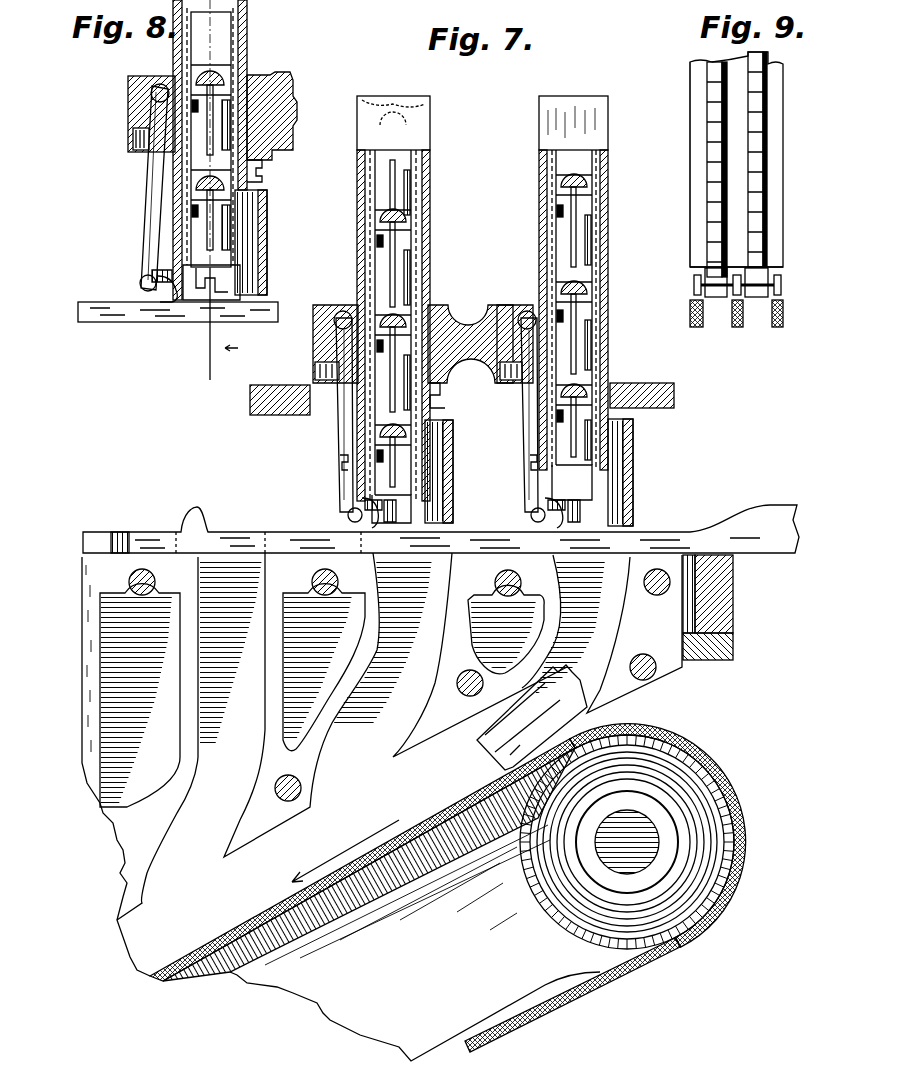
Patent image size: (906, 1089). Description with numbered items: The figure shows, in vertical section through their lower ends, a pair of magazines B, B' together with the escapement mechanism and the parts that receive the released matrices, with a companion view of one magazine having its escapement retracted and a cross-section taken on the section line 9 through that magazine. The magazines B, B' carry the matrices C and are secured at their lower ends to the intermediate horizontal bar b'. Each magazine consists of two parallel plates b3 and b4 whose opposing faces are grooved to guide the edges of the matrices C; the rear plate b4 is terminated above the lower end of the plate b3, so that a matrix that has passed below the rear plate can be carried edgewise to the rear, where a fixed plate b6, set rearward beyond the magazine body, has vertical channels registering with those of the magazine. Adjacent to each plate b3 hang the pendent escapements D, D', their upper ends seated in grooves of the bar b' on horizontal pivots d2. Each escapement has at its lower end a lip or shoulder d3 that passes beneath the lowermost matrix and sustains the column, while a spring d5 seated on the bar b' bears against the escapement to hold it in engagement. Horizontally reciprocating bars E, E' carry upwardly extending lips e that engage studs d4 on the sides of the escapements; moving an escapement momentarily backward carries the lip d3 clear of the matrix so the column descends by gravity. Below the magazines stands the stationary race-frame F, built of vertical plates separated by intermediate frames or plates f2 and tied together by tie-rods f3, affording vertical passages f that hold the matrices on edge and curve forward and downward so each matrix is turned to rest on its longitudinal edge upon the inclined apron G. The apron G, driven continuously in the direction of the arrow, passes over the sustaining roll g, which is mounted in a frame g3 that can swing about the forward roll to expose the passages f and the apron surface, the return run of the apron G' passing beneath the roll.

In FIG. 7, the magazine B is at (406, 123).
In FIG. 7, the magazine B' is at (557, 123).
In FIG. 8, the matrix C is at (222, 56).
In FIG. 9, the matrix C is at (712, 118).
In FIG. 7, the matrix C is at (375, 176).
In FIG. 8, the lower horizontal bar b' is at (273, 118).
In FIG. 7, the lower horizontal bar b' is at (462, 360).
In FIG. 8, the front magazine plate b3 is at (172, 205).
In FIG. 7, the front magazine plate b3 is at (357, 255).
In FIG. 8, the rear magazine plate b4 is at (248, 32).
In FIG. 7, the rear magazine plate b4 is at (430, 268).
In FIG. 8, the fixed plate b6 is at (268, 240).
In FIG. 7, the fixed plate b6 is at (455, 437).
In FIG. 8, the horizontal pivot d2 is at (158, 82).
In FIG. 7, the horizontal pivot d2 is at (341, 310).
In FIG. 8, the lip or shoulder d3 is at (160, 268).
In FIG. 9, the lip or shoulder d3 is at (705, 268).
In FIG. 7, the lip or shoulder d3 is at (395, 508).
In FIG. 8, the stud d4 is at (140, 283).
In FIG. 9, the stud d4 is at (694, 284).
In FIG. 7, the stud d4 is at (348, 512).
In FIG. 8, the spring d5 is at (133, 150).
In FIG. 7, the spring d5 is at (488, 382).
In FIG. 8, the escapement D is at (140, 188).
In FIG. 7, the escapement D is at (330, 415).
In FIG. 7, the escapement D' is at (528, 415).
In FIG. 8, the upwardly extending lip e is at (178, 292).
In FIG. 7, the upwardly extending lip e is at (360, 502).
In FIG. 8, the horizontally reciprocating bar E is at (178, 329).
In FIG. 9, the horizontally reciprocating bar E is at (749, 328).
In FIG. 7, the horizontally reciprocating bar E is at (441, 570).
In FIG. 9, the horizontally reciprocating bar E' is at (721, 328).
In FIG. 7, the horizontally reciprocating bar E' is at (129, 526).
In FIG. 7, the race-frame F is at (83, 720).
In FIG. 7, the vertical channel or passage f is at (262, 700).
In FIG. 7, the intermediate frame or plate f2 is at (180, 640).
In FIG. 7, the tie-rod f3 is at (130, 583).
In FIG. 7, the apron G is at (448, 852).
In FIG. 7, the return band G' is at (572, 995).
In FIG. 7, the roll g is at (627, 842).
In FIG. 7, the frame g3 is at (415, 943).
In FIG. 8, the section line 9 is at (220, 334).